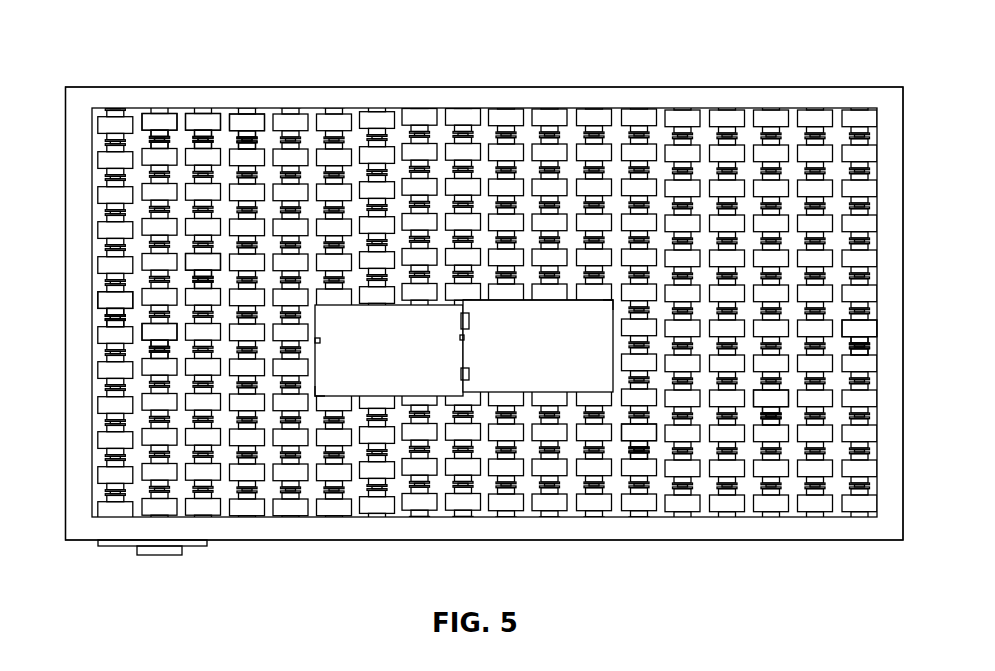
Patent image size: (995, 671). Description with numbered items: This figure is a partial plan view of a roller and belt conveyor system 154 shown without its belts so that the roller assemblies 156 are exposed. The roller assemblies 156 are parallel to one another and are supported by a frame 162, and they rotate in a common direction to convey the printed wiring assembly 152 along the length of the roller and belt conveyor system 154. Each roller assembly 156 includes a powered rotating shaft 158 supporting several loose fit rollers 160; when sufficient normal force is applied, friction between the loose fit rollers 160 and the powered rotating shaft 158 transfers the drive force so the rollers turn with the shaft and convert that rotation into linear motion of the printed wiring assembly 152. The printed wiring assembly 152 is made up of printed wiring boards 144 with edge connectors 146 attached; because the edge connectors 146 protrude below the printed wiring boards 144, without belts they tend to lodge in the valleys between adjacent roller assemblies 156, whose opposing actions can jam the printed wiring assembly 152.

The roller and belt conveyor system 154 is at (568, 80).
The roller assemblies 156 is at (170, 108).
The printed wiring board 144 is at (537, 348).
The printed wiring assembly 152 is at (541, 298).
The edge connector 146 is at (616, 303).
The frame 162 is at (687, 96).
The powered rotating shaft 158 is at (200, 280).
The loose fit rollers 160 is at (851, 332).